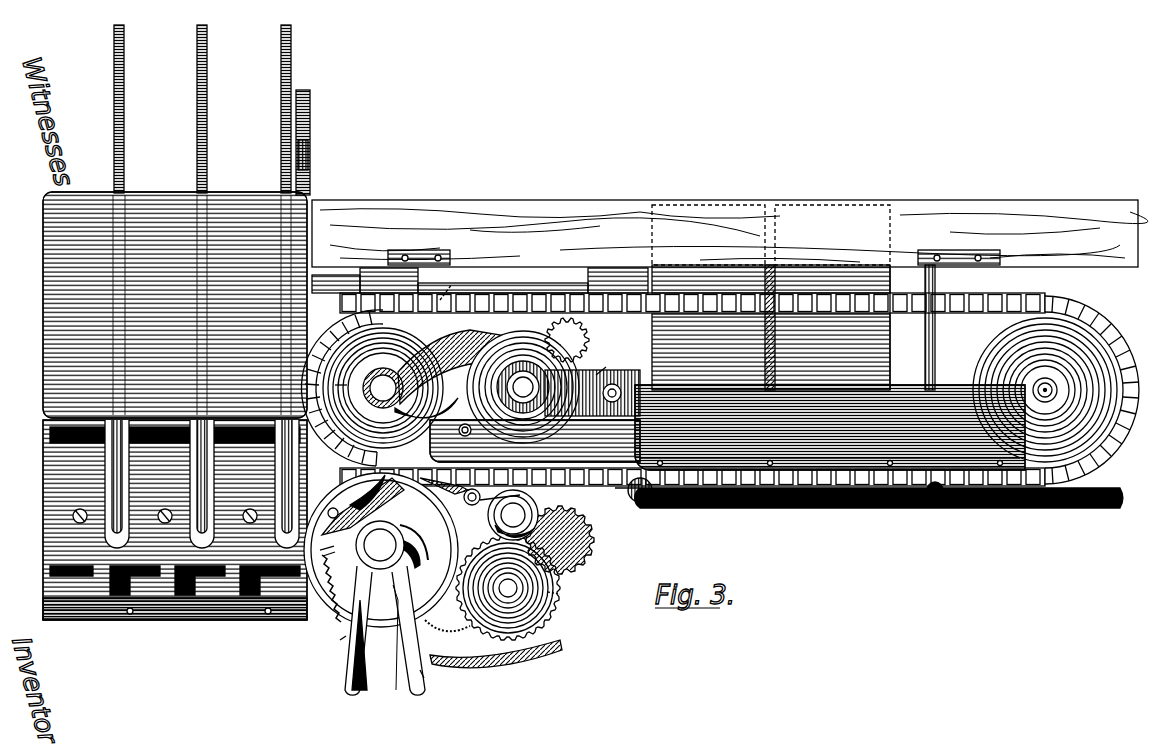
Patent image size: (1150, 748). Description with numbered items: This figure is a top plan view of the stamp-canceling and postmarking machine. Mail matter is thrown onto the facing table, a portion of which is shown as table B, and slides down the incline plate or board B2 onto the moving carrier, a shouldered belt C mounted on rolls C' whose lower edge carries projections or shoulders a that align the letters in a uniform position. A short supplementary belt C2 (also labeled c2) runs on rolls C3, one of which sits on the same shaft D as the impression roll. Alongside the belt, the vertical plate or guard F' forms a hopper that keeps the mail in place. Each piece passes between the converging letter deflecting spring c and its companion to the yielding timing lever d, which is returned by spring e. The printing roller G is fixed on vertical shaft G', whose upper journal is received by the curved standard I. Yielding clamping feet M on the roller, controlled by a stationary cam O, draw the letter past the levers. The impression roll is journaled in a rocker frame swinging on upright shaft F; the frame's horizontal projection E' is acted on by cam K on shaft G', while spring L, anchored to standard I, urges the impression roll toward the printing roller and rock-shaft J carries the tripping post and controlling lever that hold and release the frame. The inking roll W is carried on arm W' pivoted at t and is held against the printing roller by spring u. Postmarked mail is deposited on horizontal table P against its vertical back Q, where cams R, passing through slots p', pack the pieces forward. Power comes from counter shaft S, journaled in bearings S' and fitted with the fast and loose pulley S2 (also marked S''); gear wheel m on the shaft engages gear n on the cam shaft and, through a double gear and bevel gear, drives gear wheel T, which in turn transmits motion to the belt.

The cams R is at (211, 109).
The gear wheel m is at (314, 142).
The gear n is at (310, 173).
The vertical back portion Q is at (45, 412).
The horizontal table P is at (175, 520).
The slots p' is at (169, 527).
The facing table portion B is at (730, 233).
The fast and loose pulley S'' is at (480, 281).
The supplementary belt c2 is at (457, 285).
The fast and loose pulley S2 is at (793, 327).
The bearings S' is at (622, 355).
The shoulders a is at (725, 396).
The belt C is at (1045, 374).
The rolls C' is at (1054, 371).
The incline plate or board B2 is at (830, 428).
The vertical longitudinal plate or guard F' is at (869, 503).
The impression roll shaft D is at (390, 388).
The rolls C3 is at (471, 373).
The horizontal projection E' is at (479, 367).
The upright shaft F is at (523, 387).
The supplementary belt C2 is at (590, 372).
The letter deflecting spring c is at (535, 416).
The printing roller G is at (381, 550).
The clamping feet M is at (362, 515).
The stationary cam O is at (415, 540).
The printing roller shaft G' is at (380, 545).
The rock-shaft J is at (331, 588).
The cam K is at (385, 630).
The spring L is at (342, 645).
The curved standard I is at (420, 678).
The spring u is at (447, 617).
The arm W' is at (496, 655).
The counter shaft S is at (508, 456).
The inking roll W is at (570, 601).
The gear wheel T is at (560, 540).
The pivot t is at (513, 515).
The spring e is at (492, 492).
The timing lever d is at (444, 483).